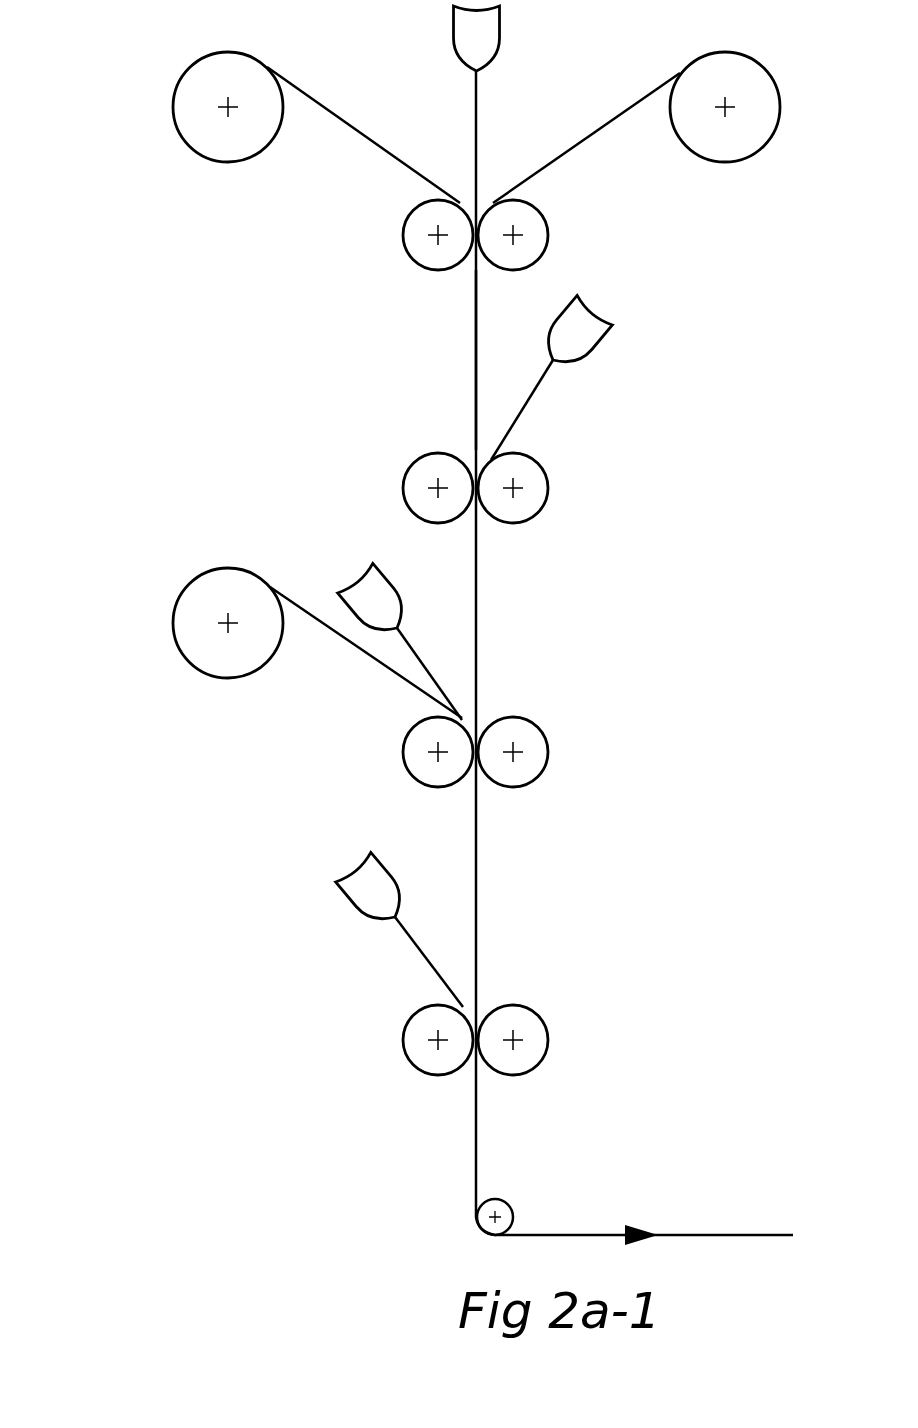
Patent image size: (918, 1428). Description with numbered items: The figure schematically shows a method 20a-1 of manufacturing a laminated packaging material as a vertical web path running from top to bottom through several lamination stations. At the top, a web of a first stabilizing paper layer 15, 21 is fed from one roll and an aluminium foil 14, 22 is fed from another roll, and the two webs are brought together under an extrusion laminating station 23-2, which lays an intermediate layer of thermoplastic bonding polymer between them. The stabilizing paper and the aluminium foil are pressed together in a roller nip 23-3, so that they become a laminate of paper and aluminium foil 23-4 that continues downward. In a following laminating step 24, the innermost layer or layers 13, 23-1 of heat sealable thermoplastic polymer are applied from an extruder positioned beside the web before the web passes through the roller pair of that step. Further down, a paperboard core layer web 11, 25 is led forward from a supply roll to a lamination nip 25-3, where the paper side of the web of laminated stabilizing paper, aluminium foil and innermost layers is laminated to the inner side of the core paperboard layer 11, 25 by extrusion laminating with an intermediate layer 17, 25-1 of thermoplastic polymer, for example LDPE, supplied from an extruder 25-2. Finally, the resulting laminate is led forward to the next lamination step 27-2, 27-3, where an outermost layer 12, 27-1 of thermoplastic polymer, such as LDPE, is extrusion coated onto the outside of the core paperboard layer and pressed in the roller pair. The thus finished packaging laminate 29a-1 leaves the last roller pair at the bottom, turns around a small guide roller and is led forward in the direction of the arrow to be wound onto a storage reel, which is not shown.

The method of manufacturing the packaging laminate 20a-1 is at (418, 653).
The first stabilizing paper layer 15 is at (285, 119).
The web of first stabilizing paper layer 21 is at (285, 119).
The aluminium foil web 22 is at (675, 121).
The aluminium foil 14 is at (675, 121).
The extrusion laminating station 23-2 is at (512, 38).
The roller nip 23-3 is at (512, 235).
The laminate of paper and aluminium foil 23-4 is at (475, 362).
The innermost layer of heat sealable thermoplastic polymer 13 is at (600, 377).
The intermediate layer of thermoplastic bonding polymer 23-1 is at (533, 407).
The laminating step for innermost layers 24 is at (499, 488).
The paperboard core layer web 25 is at (293, 631).
The core paperboard layer 11 is at (293, 631).
The extruder 25-2 is at (361, 590).
The intermediate layer of thermoplastic polymer 25-1 is at (506, 674).
The intermediate thermoplastic polymer layer 17 is at (420, 662).
The lamination nip 25-3 is at (511, 752).
The extruder of final lamination step 27-2 is at (354, 880).
The outermost layer of thermoplastic polymer 27-1 is at (350, 962).
The outermost thermoplastic polymer layer 12 is at (423, 963).
The roller nip of final lamination step 27-3 is at (511, 1040).
The finished packaging laminate 29a-1 is at (628, 1222).